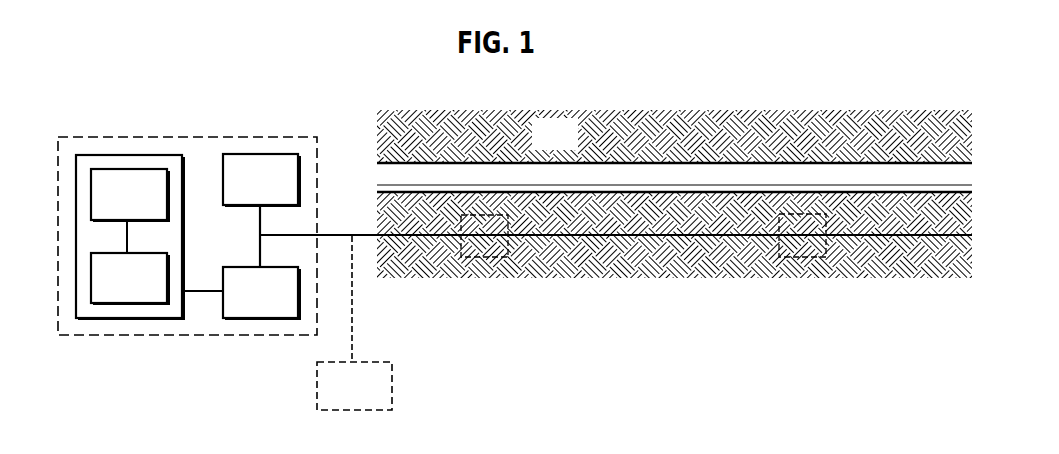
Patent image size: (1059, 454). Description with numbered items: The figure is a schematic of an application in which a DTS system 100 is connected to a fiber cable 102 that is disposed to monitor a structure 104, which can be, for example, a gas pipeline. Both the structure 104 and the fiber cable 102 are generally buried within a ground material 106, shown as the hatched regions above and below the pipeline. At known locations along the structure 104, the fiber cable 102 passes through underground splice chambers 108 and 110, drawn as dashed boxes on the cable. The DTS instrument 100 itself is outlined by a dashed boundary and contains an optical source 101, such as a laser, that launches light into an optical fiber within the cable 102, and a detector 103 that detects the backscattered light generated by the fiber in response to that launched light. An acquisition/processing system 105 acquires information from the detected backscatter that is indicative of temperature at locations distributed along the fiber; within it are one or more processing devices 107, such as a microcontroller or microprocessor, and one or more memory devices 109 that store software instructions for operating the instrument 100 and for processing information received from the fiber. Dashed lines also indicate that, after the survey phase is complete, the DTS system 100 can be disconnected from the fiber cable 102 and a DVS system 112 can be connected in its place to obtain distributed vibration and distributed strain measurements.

The DTS system 100 is at (212, 137).
The optical source 101 is at (241, 194).
The fiber cable 102 is at (612, 237).
The detector 103 is at (241, 304).
The structure 104 is at (735, 164).
The acquisition/processing system 105 is at (149, 208).
The ground material 106 is at (535, 148).
The processing device 107 is at (109, 290).
The underground splice chamber 108 is at (488, 258).
The memory device 109 is at (109, 206).
The underground splice chamber 110 is at (807, 258).
The DVS system 112 is at (335, 397).